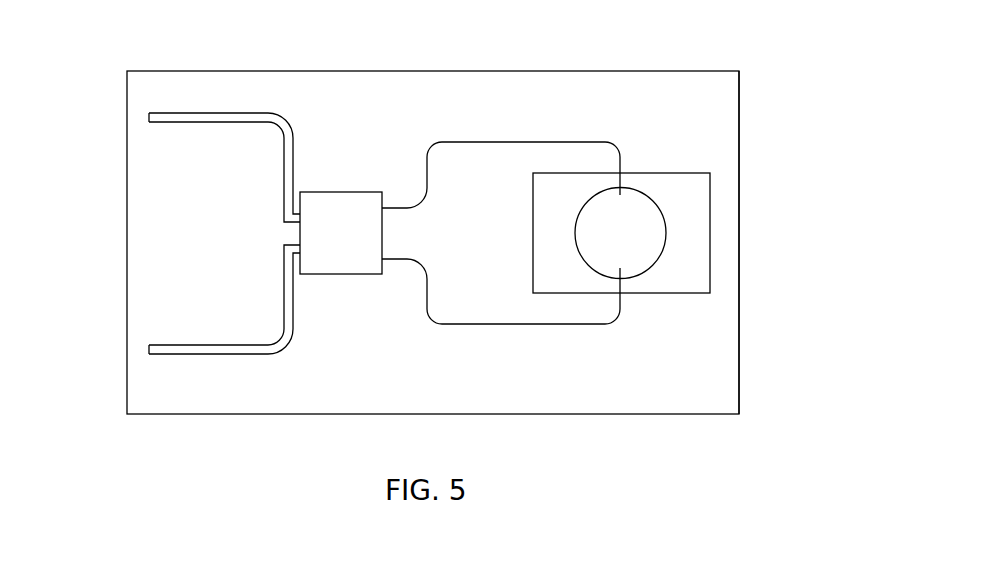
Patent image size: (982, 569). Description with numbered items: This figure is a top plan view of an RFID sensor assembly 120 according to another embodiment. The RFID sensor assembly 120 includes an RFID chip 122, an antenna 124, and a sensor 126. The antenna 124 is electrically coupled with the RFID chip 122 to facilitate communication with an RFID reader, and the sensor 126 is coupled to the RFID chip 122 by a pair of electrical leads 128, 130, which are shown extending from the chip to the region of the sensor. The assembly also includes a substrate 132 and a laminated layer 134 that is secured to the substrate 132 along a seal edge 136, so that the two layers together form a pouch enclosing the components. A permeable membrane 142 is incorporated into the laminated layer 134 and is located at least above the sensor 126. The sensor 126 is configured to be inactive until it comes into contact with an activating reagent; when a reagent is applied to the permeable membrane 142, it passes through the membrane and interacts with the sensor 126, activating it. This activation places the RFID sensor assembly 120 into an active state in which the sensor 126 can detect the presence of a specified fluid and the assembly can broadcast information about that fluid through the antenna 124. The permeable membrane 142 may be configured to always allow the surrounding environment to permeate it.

The RFID sensor assembly 120 is at (172, 55).
The RFID chip 122 is at (340, 232).
The antenna 124 is at (233, 112).
The sensor 126 is at (680, 203).
The electrical lead 128 is at (502, 140).
The electrical lead 130 is at (456, 324).
The substrate 132 is at (217, 397).
The laminated layer 134 is at (190, 287).
The seal edge 136 is at (739, 340).
The permeable membrane 142 is at (620, 233).